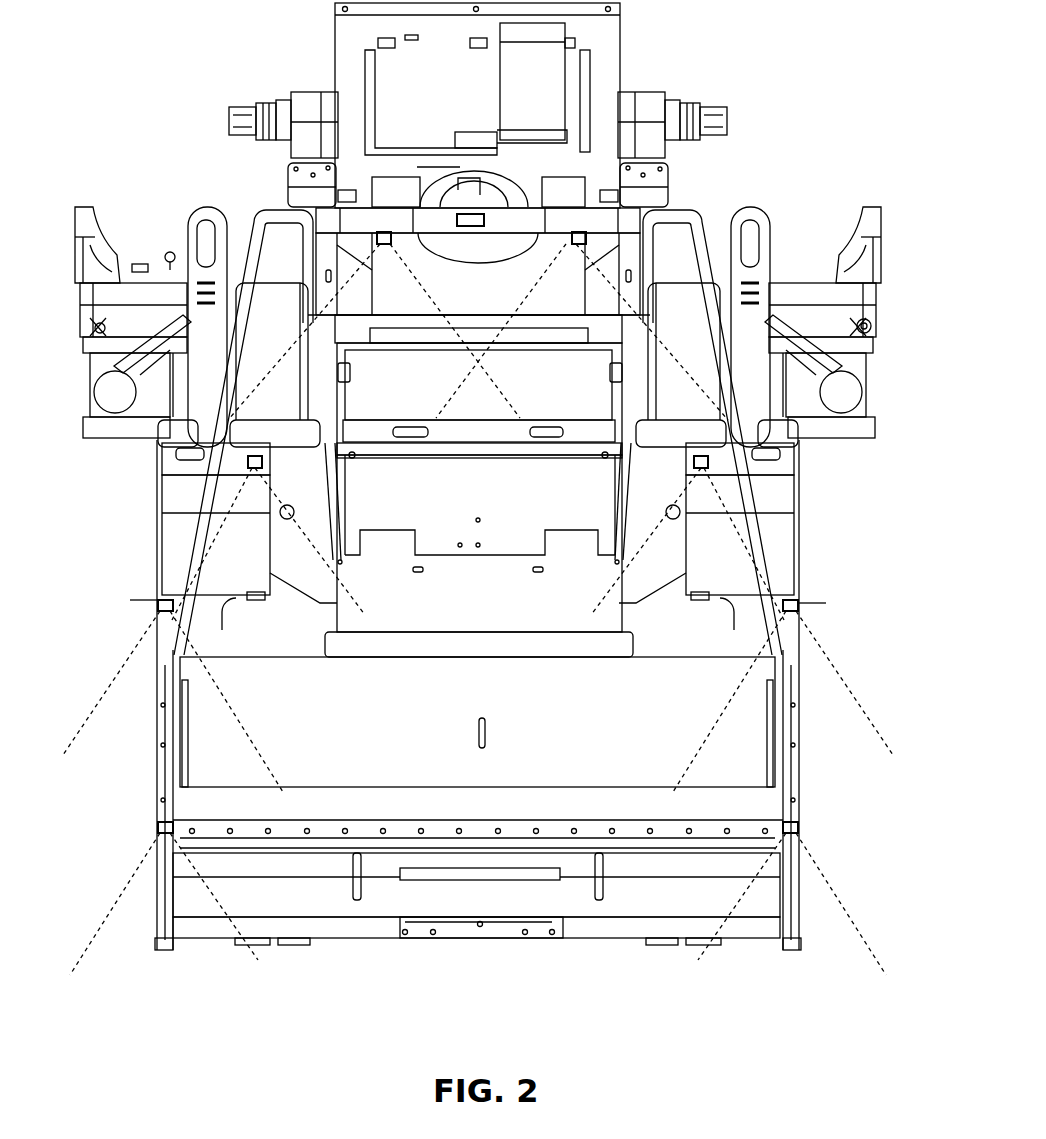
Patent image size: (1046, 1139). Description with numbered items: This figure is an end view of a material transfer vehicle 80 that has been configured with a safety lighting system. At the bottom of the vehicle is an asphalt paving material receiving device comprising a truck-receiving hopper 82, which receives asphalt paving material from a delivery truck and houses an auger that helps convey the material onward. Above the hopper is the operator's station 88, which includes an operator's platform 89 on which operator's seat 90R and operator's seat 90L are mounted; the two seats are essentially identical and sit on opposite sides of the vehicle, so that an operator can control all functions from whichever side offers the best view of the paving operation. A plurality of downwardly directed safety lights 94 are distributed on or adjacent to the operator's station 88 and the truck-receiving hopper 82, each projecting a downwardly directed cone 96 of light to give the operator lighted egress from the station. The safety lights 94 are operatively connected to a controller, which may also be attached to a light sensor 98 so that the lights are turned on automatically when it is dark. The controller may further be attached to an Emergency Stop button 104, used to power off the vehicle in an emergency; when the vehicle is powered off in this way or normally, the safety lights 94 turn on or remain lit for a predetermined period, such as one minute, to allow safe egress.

The material transfer vehicle 80 is at (236, 60).
The truck-receiving hopper 82 is at (570, 950).
The operator's station 88 is at (886, 318).
The operator's platform 89 is at (80, 428).
The operator's seat 90R is at (108, 216).
The operator's seat 90L is at (886, 242).
The safety lights 94 is at (393, 240).
The cone of light 96 is at (668, 87).
The light sensor 98 is at (470, 226).
The Emergency Stop button 104 is at (170, 250).